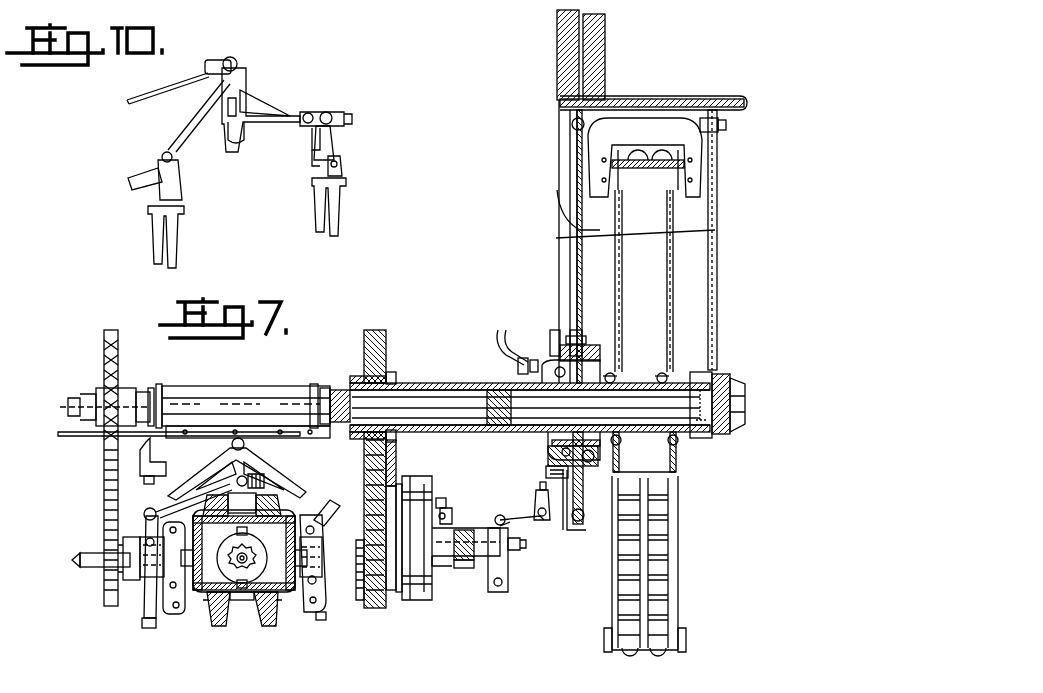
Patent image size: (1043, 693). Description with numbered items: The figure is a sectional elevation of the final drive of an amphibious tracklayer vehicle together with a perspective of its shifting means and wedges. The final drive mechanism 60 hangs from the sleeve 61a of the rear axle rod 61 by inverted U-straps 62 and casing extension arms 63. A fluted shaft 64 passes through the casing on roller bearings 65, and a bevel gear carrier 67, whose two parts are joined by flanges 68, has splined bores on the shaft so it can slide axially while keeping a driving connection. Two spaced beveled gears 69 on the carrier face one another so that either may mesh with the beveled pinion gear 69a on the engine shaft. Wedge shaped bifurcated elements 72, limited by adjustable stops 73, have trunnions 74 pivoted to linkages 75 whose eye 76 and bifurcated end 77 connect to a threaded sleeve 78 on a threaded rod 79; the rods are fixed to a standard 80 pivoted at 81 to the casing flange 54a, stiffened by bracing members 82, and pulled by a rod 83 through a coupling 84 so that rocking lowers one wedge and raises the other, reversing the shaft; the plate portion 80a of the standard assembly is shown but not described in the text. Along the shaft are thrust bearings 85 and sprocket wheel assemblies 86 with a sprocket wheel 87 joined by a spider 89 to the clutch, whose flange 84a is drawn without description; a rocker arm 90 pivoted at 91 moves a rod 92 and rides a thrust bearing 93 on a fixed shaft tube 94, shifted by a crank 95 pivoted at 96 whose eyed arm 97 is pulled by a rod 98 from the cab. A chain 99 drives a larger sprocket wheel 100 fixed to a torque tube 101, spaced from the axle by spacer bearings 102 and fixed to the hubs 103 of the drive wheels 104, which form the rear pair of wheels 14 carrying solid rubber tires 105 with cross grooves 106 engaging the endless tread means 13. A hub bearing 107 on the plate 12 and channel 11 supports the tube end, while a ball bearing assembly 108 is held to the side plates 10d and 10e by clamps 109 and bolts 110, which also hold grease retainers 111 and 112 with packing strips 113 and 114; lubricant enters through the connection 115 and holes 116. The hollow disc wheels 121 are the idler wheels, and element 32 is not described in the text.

In FIG. 7, the heavy side plate 10d is at (580, 526).
In FIG. 7, the inner plate 10e is at (560, 226).
In FIG. 7, the channel 11 is at (728, 372).
In FIG. 7, the plate 12 is at (718, 278).
In FIG. 7, the endless tread means 13 is at (708, 160).
In FIG. 7, the rear pair of wheels 14 is at (696, 540).
In FIG. 7, the support member 32 is at (568, 532).
In FIG. 7, the casing flange 54a is at (165, 500).
In FIG. 7, the final drive mechanism 60 is at (217, 638).
In FIG. 7, the rear axle rod 61 is at (66, 408).
In FIG. 7, the sleeve 61a is at (204, 390).
In FIG. 7, the inverted U-strap 62 is at (152, 388).
In FIG. 7, the casing extension arm 63 is at (140, 460).
In FIG. 7, the fluted shaft 64 is at (82, 569).
In FIG. 7, the roller bearing 65 is at (140, 548).
In FIG. 7, the bevel gear carrier 67 is at (240, 600).
In FIG. 7, the flange 68 is at (238, 524).
In FIG. 7, the beveled gear 69 is at (196, 618).
In FIG. 7, the beveled pinion gear 69a is at (302, 614).
In FIG. 10, the wedge shaped bifurcated element 72 is at (180, 230).
In FIG. 7, the adjustable stop 73 is at (150, 628).
In FIG. 10, the trunnion 74 is at (344, 166).
In FIG. 10, the linkage 75 is at (184, 184).
In FIG. 10, the eye 76 is at (312, 162).
In FIG. 10, the bifurcated end 77 is at (312, 138).
In FIG. 10, the threaded sleeve 78 is at (326, 110).
In FIG. 10, the threaded rod 79 is at (164, 152).
In FIG. 10, the standard 80 is at (246, 76).
In FIG. 7, the standard 80 is at (246, 440).
In FIG. 7, the frame plate 80a is at (300, 426).
In FIG. 10, the pivot 81 is at (238, 146).
In FIG. 10, the bracing member 82 is at (200, 110).
In FIG. 10, the rod 83 is at (152, 86).
In FIG. 7, the rod 83 is at (195, 432).
In FIG. 10, the bifurcated coupling / clutch brake assembly 84 is at (222, 56).
In FIG. 7, the bifurcated coupling / clutch brake assembly 84 is at (412, 618).
In FIG. 7, the flange 84a is at (424, 604).
In FIG. 7, the thrust bearing 85 is at (124, 600).
In FIG. 7, the sprocket wheel assembly 86 is at (104, 504).
In FIG. 7, the sprocket wheel 87 is at (412, 484).
In FIG. 7, the spider 89 is at (388, 606).
In FIG. 7, the rocker arm 90 is at (448, 532).
In FIG. 7, the pivot 91 is at (452, 514).
In FIG. 7, the rod 92 is at (446, 502).
In FIG. 7, the thrust bearing 93 is at (458, 570).
In FIG. 7, the fixed shaft tube 94 is at (436, 568).
In FIG. 7, the crank 95 is at (498, 594).
In FIG. 7, the pivot 96 is at (502, 514).
In FIG. 7, the eyed arm 97 is at (522, 542).
In FIG. 7, the rod 98 is at (548, 524).
In FIG. 7, the chain 99 is at (386, 460).
In FIG. 7, the sprocket wheel 100 is at (386, 348).
In FIG. 7, the torque tube 101 is at (438, 372).
In FIG. 7, the spacer bearing 102 is at (420, 430).
In FIG. 7, the hub 103 is at (660, 370).
In FIG. 7, the drive wheel 104 is at (655, 267).
In FIG. 7, the tire 105 is at (666, 652).
In FIG. 7, the cross groove 106 is at (668, 576).
In FIG. 7, the hub bearing 107 is at (700, 370).
In FIG. 7, the ball bearing assembly 108 is at (543, 470).
In FIG. 7, the clamp 109 is at (572, 330).
In FIG. 7, the bolt 110 is at (562, 344).
In FIG. 7, the grease retainer 111 is at (546, 360).
In FIG. 7, the grease retainer 112 is at (614, 370).
In FIG. 7, the packing strip 113 is at (548, 446).
In FIG. 7, the packing strip 114 is at (618, 460).
In FIG. 7, the connection 115 is at (502, 330).
In FIG. 7, the hole 116 is at (518, 366).
In FIG. 7, the hollow metallic disc wheel 121 is at (490, 384).